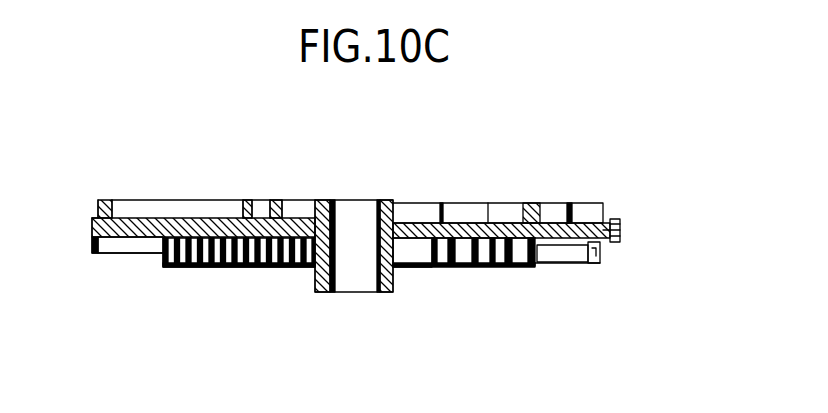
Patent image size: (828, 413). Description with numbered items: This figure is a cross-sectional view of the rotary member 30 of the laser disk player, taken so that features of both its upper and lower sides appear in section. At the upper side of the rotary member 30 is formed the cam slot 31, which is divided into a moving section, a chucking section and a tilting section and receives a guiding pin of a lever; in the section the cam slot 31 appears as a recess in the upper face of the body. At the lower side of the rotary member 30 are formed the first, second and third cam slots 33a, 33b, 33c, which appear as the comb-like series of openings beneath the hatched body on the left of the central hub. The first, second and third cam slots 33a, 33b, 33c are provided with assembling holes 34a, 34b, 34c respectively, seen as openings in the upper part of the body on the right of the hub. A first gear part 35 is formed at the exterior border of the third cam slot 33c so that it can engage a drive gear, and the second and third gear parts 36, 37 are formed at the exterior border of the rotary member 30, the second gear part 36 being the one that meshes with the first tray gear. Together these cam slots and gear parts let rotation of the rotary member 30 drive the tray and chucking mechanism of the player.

The rotary member 30 is at (196, 198).
The cam slot 31 is at (557, 207).
The first cam slot 33a is at (250, 268).
The second cam slot 33b is at (218, 268).
The third cam slot 33c is at (178, 268).
The assembling hole 34a is at (439, 207).
The assembling hole 34b is at (484, 207).
The assembling hole 34c is at (518, 207).
The first gear part 35 is at (545, 268).
The second gear part 36 is at (625, 240).
The third gear part 37 is at (597, 265).